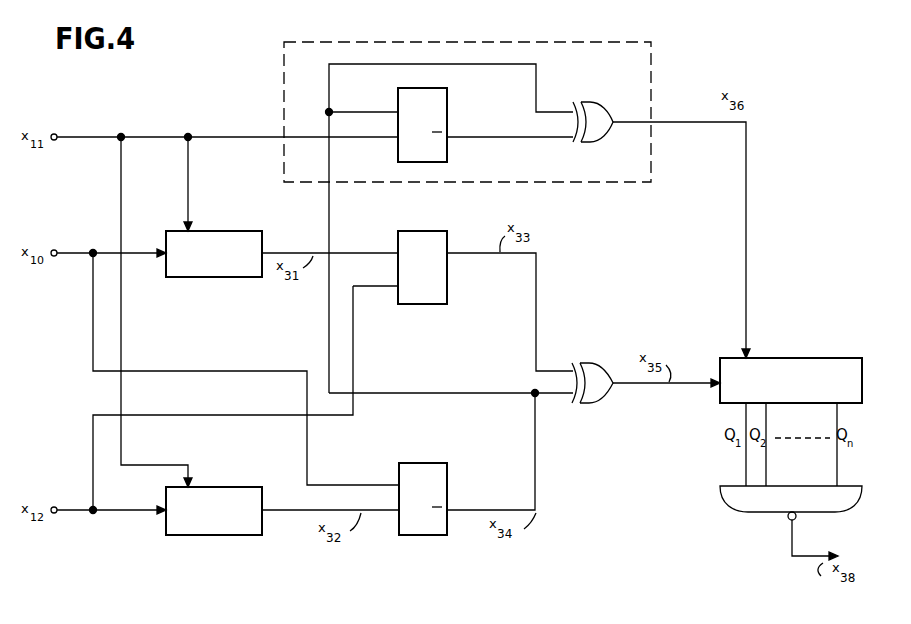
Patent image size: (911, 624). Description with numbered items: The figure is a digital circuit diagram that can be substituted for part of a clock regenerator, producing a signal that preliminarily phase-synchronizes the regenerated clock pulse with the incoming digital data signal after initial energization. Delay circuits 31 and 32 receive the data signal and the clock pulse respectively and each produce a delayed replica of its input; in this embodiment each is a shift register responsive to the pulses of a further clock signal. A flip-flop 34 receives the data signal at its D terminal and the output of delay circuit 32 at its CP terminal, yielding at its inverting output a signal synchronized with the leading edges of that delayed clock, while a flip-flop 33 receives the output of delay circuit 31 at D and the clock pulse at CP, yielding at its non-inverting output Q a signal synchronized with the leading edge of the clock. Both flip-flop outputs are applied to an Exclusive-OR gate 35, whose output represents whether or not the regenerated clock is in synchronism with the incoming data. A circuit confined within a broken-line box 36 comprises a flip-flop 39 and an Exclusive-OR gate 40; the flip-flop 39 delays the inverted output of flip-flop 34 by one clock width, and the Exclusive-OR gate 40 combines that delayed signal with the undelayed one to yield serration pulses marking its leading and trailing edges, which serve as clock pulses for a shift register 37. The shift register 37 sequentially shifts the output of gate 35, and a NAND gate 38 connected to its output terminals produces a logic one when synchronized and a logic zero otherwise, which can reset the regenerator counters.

The delay circuit 31 is at (253, 234).
The delay circuit 32 is at (262, 488).
The flip-flop 33 is at (448, 231).
The flip-flop 34 is at (437, 463).
The Exclusive-OR gate 35 is at (609, 369).
The broken-line box 36 is at (651, 65).
The shift register 37 is at (834, 358).
The NAND gate 38 is at (720, 500).
The flip-flop 39 is at (448, 96).
The Exclusive-OR gate 40 is at (597, 101).